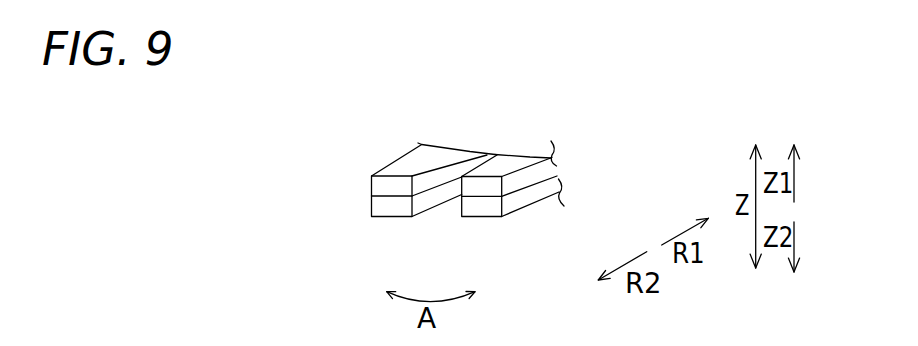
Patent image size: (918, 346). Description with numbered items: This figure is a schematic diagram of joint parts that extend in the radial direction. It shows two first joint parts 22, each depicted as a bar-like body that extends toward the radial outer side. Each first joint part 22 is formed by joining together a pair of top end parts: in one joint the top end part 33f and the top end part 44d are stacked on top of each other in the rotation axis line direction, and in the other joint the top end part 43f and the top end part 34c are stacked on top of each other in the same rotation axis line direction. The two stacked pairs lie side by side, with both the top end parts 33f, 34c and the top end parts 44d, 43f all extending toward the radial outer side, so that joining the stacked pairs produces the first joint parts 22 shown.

The first joint part 22 is at (361, 192).
The top end part 33f is at (405, 170).
The top end part 43f is at (523, 152).
The top end part 44d is at (388, 206).
The top end part 34c is at (480, 206).